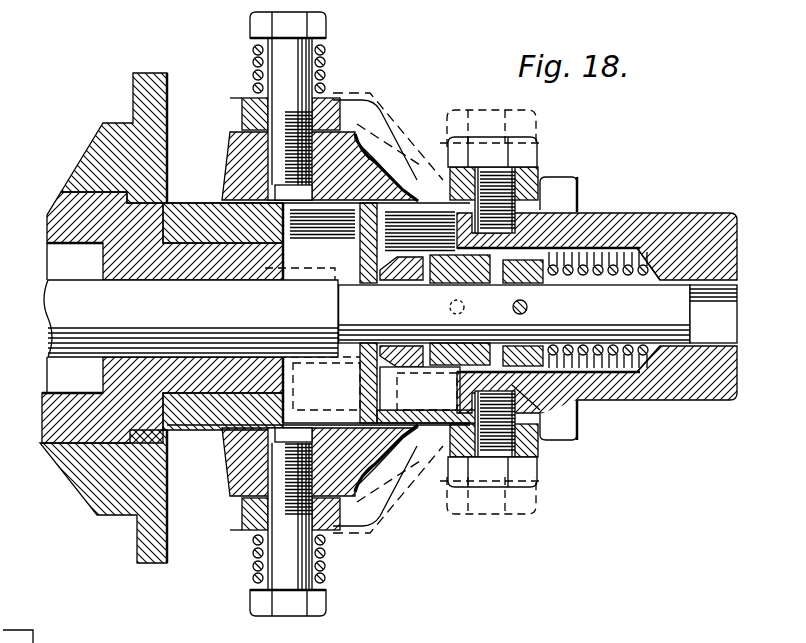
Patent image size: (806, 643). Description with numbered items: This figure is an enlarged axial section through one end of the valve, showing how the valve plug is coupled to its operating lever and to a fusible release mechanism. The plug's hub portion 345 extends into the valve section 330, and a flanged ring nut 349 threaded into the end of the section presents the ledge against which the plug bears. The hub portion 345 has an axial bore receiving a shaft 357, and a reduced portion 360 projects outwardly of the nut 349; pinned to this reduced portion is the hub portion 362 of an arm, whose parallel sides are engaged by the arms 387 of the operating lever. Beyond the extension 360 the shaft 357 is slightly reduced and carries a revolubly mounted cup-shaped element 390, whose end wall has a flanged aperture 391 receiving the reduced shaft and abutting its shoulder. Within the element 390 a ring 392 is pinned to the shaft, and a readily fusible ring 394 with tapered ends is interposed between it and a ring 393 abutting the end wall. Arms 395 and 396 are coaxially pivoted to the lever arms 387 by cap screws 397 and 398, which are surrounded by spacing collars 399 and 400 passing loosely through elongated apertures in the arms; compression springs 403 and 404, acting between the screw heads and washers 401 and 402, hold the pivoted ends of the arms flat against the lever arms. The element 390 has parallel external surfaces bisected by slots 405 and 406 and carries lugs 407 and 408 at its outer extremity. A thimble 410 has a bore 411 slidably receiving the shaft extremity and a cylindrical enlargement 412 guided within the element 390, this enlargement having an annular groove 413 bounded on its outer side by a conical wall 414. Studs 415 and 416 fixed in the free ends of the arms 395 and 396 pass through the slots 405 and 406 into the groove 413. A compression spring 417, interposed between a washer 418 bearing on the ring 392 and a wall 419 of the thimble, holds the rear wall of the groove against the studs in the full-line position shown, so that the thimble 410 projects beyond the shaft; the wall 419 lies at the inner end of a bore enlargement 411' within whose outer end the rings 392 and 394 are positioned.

The section 330 is at (20, 640).
The hub portion 345 is at (80, 228).
The flanged ring nut 349 is at (133, 96).
The shaft 357 is at (713, 207).
The reduced portion 360 is at (200, 265).
The hub portion of arm 362 is at (195, 203).
The arms of lever 387 is at (238, 143).
The cup-shaped element 390 is at (441, 195).
The flanged aperture 391 is at (352, 283).
The ring 392 is at (527, 308).
The ring 393 is at (367, 370).
The fusible ring 394 is at (431, 365).
The arm 395 is at (387, 127).
The arm 396 is at (380, 508).
The cap screw 397 is at (250, 24).
The cap screw 398 is at (330, 606).
The spacing collar 399 is at (327, 58).
The spacing collar 400 is at (257, 557).
The washer 401 is at (243, 99).
The washer 402 is at (245, 536).
The compression spring 403 is at (328, 71).
The compression spring 404 is at (327, 571).
The slot 405 is at (526, 206).
The slot 406 is at (535, 407).
The lug 407 is at (561, 187).
The lug 408 is at (574, 429).
The thimble 410 is at (617, 221).
The bore 411 is at (733, 308).
The bore enlargement 411' is at (621, 394).
The cylindrical enlargement 412 is at (563, 218).
The annular groove 413 is at (530, 400).
The conical wall 414 is at (517, 408).
The stud 415 is at (538, 170).
The stud 416 is at (432, 455).
The compression spring 417 is at (649, 258).
The washer 418 is at (541, 270).
The wall 419 is at (645, 272).